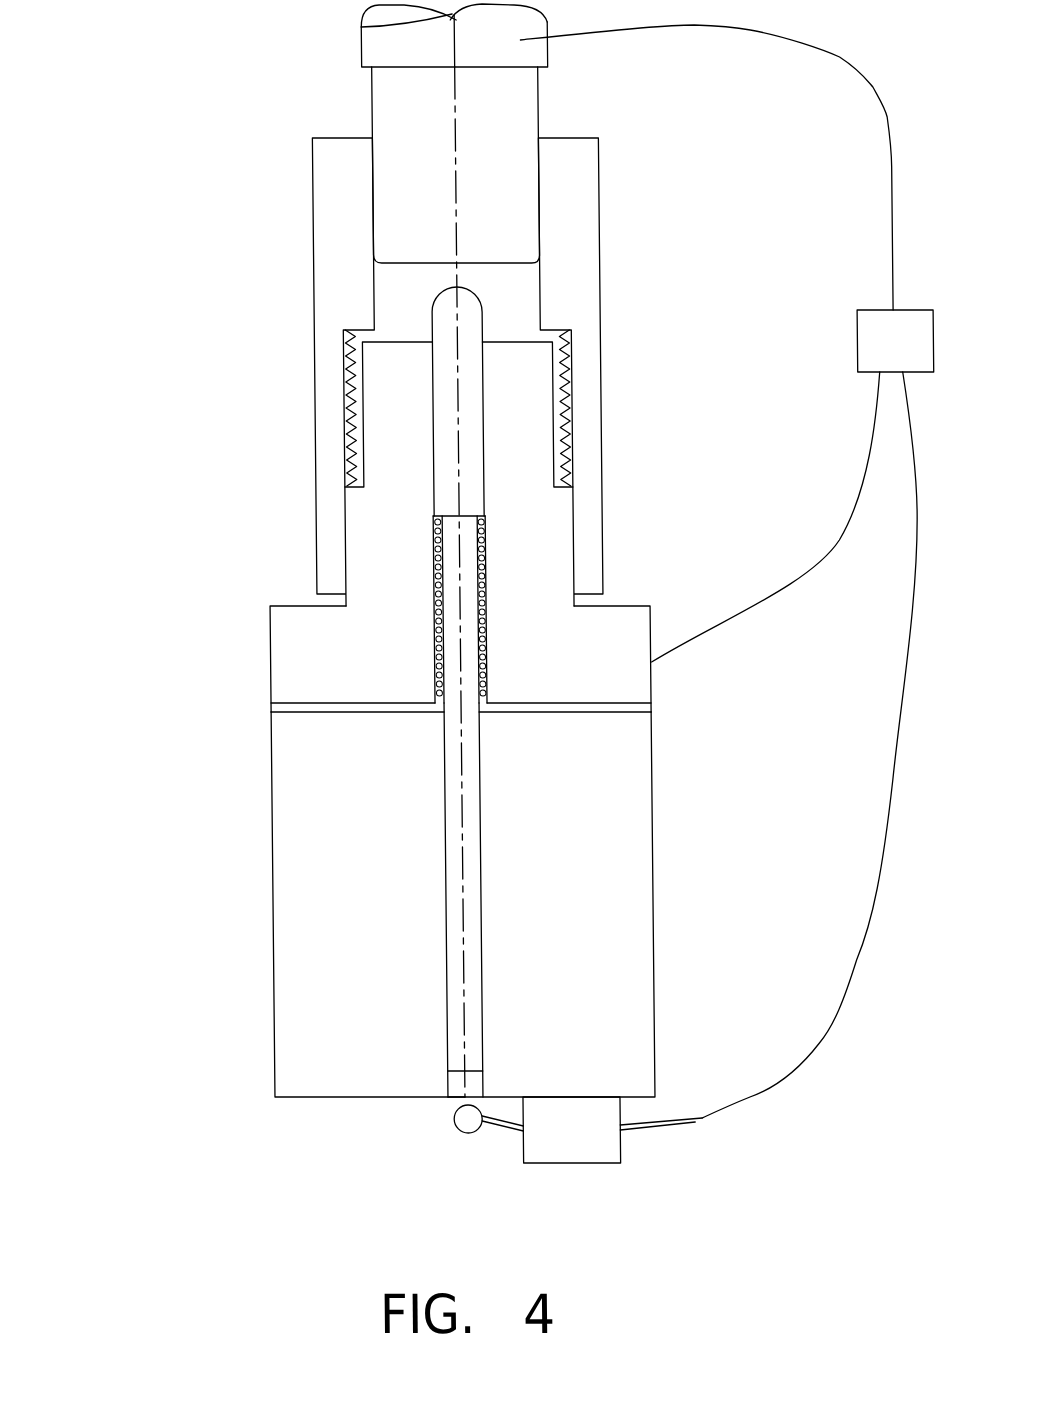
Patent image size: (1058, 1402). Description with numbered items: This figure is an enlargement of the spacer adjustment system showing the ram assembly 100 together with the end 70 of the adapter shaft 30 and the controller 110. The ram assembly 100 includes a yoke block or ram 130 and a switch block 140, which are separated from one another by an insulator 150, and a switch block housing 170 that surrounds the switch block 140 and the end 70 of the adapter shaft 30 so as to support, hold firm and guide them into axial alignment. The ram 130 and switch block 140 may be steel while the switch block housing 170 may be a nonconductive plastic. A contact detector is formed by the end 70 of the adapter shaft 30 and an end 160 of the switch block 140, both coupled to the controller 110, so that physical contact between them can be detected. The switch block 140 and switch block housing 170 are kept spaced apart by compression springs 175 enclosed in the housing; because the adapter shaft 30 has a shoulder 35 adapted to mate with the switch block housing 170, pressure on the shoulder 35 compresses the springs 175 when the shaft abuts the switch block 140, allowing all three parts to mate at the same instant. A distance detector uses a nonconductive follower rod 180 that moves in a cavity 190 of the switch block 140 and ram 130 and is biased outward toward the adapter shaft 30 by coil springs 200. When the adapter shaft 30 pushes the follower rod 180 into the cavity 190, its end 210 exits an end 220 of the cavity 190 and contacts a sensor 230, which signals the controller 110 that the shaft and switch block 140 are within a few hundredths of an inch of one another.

The adapter shaft 30 is at (405, 47).
The shoulder 35 is at (544, 67).
The end of adapter shaft 70 is at (493, 257).
The ram assembly 100 is at (183, 140).
The controller 110 is at (794, 714).
The ram 130 is at (312, 938).
The switch block 140 is at (317, 656).
The insulator 150 is at (651, 705).
The end of switch block 160 is at (515, 345).
The switch block housing 170 is at (340, 255).
The compression springs 175 is at (572, 423).
The follower rod 180 is at (453, 507).
The cavity 190 is at (481, 913).
The springs 200 is at (485, 663).
The end of follower rod 210 is at (468, 1072).
The end of cavity 220 is at (450, 1097).
The sensor 230 is at (463, 1127).